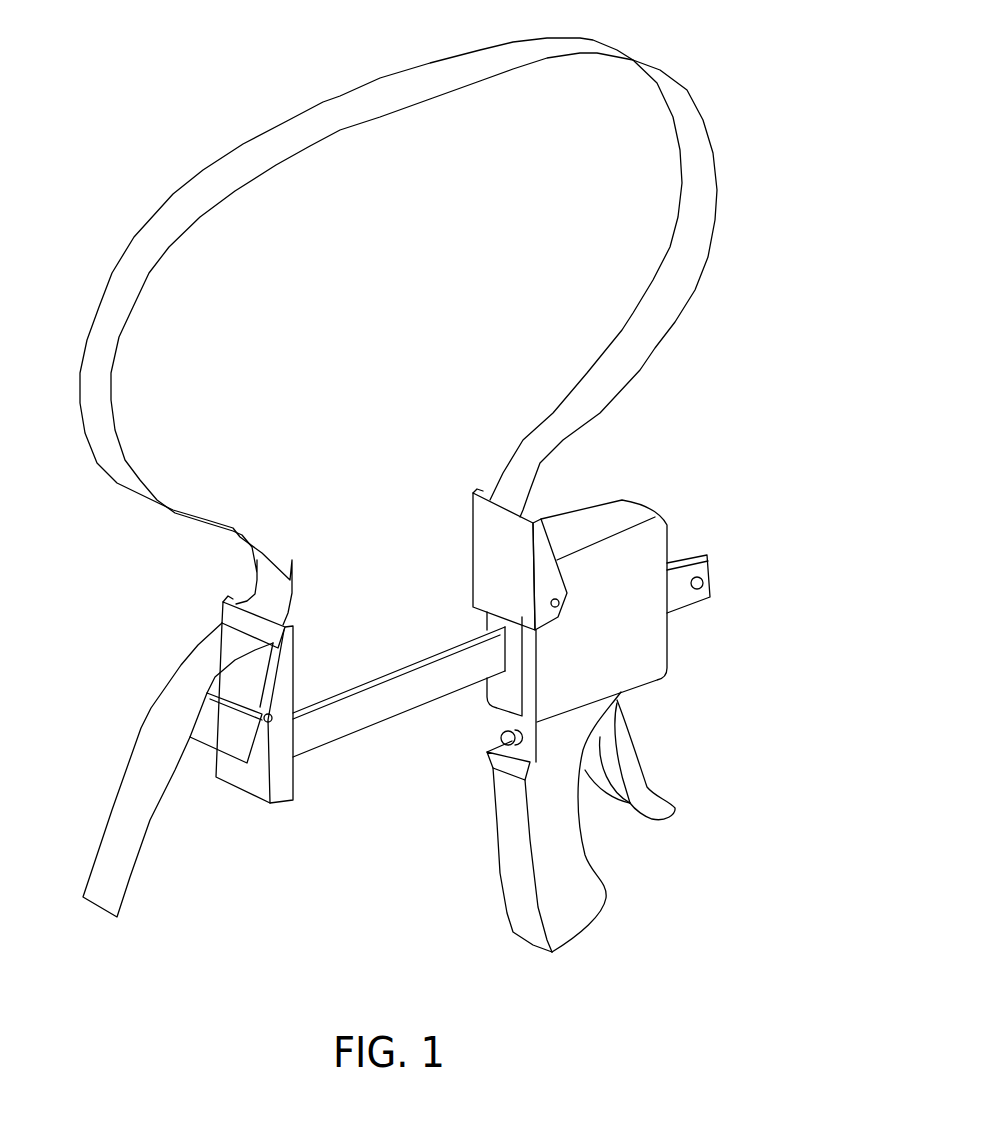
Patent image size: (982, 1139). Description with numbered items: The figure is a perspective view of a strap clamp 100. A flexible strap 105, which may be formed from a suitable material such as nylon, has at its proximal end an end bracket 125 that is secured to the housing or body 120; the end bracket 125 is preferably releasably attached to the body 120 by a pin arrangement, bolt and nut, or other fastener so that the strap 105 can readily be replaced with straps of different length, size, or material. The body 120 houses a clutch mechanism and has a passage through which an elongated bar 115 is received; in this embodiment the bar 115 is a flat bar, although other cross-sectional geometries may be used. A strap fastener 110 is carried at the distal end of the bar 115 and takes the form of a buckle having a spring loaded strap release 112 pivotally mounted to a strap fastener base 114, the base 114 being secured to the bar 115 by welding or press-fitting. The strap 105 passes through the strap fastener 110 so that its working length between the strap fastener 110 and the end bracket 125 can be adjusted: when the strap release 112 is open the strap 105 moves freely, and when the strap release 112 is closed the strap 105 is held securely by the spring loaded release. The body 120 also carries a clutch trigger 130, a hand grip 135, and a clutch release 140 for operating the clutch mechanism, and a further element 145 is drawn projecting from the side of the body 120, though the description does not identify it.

The strap clamp 100 is at (737, 148).
The strap 105 is at (113, 387).
The strap fastener 110 is at (295, 640).
The strap release 112 is at (207, 753).
The strap fastener base 114 is at (258, 798).
The bar 115 is at (357, 734).
The body 120 is at (680, 518).
The end bracket 125 is at (472, 548).
The clutch trigger 130 is at (637, 747).
The hand grip 135 is at (608, 888).
The clutch release 140 is at (501, 738).
The rod 145 is at (704, 583).